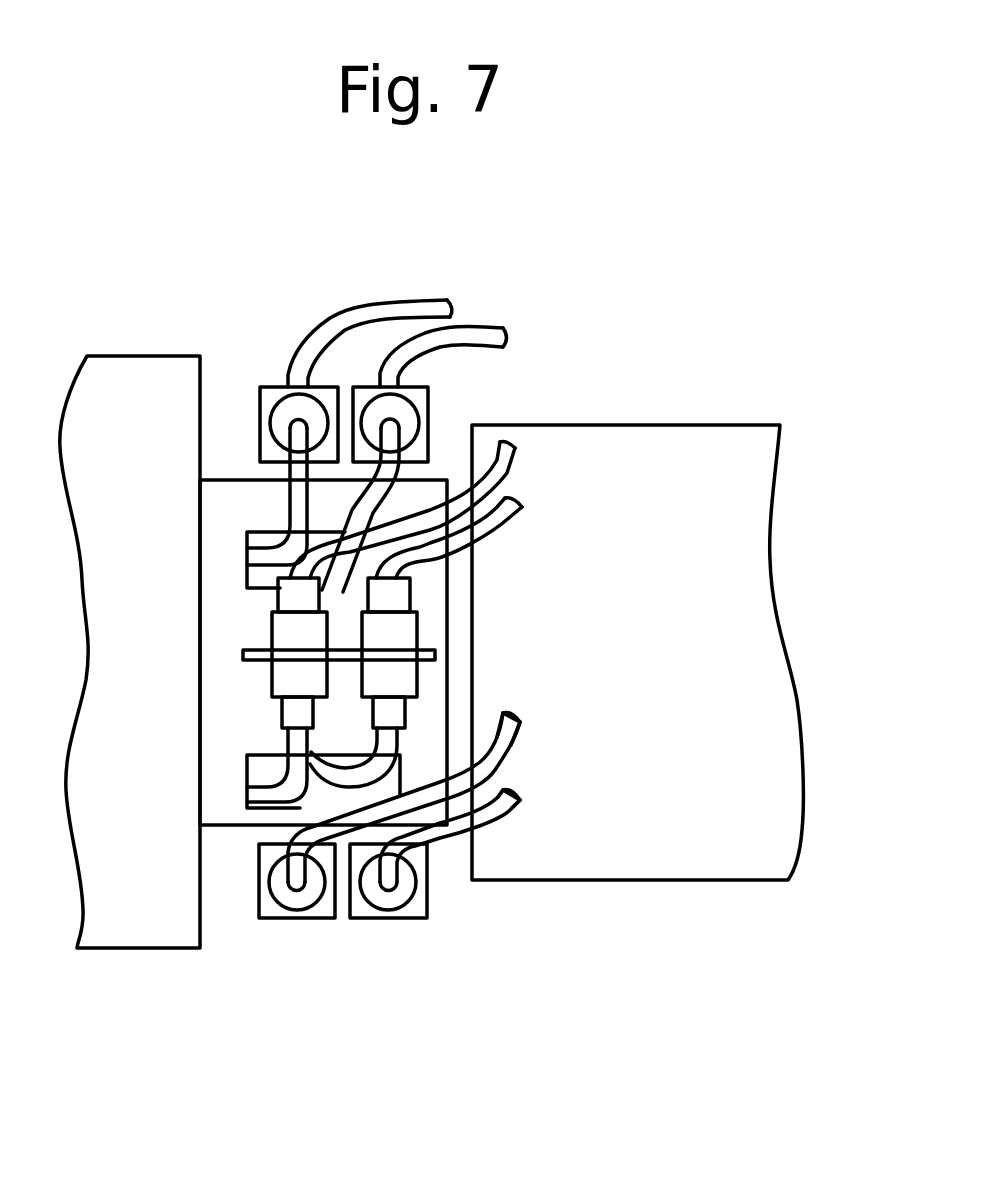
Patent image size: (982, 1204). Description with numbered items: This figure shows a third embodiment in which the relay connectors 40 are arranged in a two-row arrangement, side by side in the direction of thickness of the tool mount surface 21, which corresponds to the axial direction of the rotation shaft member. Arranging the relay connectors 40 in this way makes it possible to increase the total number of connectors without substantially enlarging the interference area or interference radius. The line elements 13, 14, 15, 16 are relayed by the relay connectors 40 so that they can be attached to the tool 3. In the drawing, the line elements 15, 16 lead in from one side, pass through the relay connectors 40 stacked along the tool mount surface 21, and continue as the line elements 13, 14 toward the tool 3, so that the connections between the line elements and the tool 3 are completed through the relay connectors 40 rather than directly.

The tool 3 is at (748, 550).
The line element 13 is at (503, 740).
The line element 14 is at (498, 807).
The line element 15 is at (363, 318).
The line element 16 is at (487, 337).
The tool mount surface 21 is at (473, 638).
The relay connector 40 is at (273, 385).